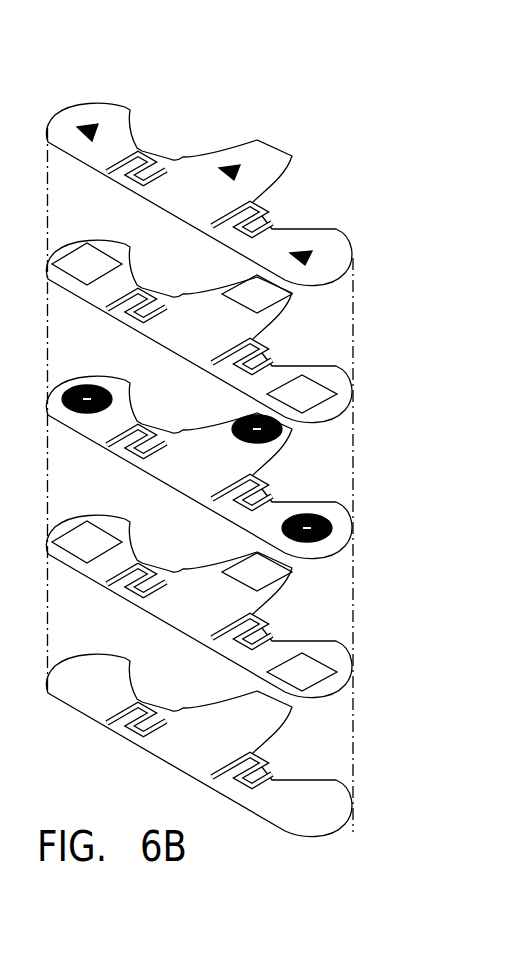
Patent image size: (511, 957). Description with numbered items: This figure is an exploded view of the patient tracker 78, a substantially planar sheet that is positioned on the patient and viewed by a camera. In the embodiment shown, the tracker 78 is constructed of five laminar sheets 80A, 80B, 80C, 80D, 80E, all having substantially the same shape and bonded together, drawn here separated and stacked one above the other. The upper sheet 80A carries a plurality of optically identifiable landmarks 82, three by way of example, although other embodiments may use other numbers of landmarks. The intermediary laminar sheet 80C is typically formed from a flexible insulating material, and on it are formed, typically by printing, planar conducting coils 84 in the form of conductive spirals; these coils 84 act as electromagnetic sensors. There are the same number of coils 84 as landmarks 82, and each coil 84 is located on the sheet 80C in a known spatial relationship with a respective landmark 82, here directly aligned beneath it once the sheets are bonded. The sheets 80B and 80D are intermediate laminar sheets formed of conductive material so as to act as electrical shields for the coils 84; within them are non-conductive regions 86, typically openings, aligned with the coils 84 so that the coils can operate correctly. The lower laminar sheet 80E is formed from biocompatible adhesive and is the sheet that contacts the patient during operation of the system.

The patient tracker 78 is at (434, 328).
The upper sheet 80A is at (353, 262).
The intermediate laminar sheet 80B is at (353, 262).
The intermediary laminar sheet 80C is at (227, 468).
The intermediate laminar sheet 80D is at (227, 607).
The lower laminar sheet 80E is at (227, 746).
The optical landmarks 82 is at (88, 124).
The planar conducting coils 84 is at (85, 396).
The non-conductive regions 86 is at (82, 262).